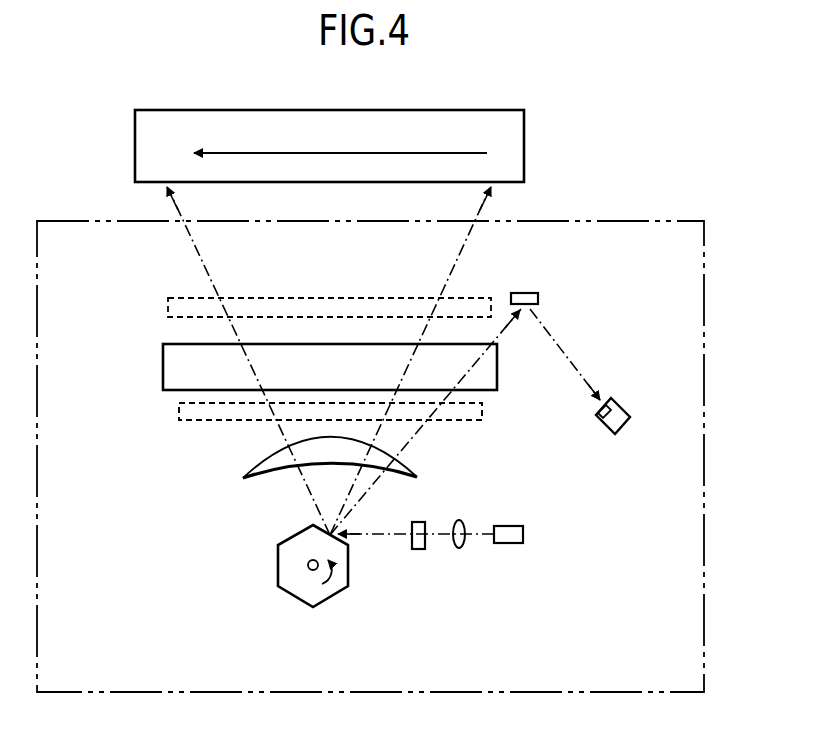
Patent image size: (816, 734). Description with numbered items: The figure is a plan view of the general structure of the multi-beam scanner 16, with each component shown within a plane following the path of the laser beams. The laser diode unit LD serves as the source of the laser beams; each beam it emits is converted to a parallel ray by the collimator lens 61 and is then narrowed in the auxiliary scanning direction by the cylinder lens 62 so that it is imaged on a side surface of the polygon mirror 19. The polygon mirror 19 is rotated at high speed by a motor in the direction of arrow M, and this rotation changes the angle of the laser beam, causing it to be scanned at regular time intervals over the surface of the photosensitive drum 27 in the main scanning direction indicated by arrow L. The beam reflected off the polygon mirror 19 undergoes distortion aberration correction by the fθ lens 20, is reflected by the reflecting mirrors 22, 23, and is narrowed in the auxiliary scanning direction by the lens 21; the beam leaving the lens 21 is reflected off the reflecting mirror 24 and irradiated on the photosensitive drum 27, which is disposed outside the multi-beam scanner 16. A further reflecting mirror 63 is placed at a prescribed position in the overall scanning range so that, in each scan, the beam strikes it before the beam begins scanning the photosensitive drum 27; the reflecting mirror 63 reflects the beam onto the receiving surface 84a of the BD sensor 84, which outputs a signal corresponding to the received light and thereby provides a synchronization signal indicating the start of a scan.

The multi-beam scanner 16 is at (639, 180).
The photosensitive drum 27 is at (461, 109).
The reflecting mirror 24 is at (168, 306).
The lens 21 is at (163, 363).
The reflecting mirror 22 is at (179, 410).
The reflecting mirror 23 is at (330, 411).
The fθ lens 20 is at (252, 462).
The polygon mirror 19 is at (292, 596).
The reflecting mirror 63 is at (521, 290).
The BD sensor 84 is at (622, 407).
The receiving surface 84a is at (602, 428).
The cylinder lens 62 is at (418, 551).
The collimator lens 61 is at (458, 549).
The laser diode unit LD is at (508, 544).